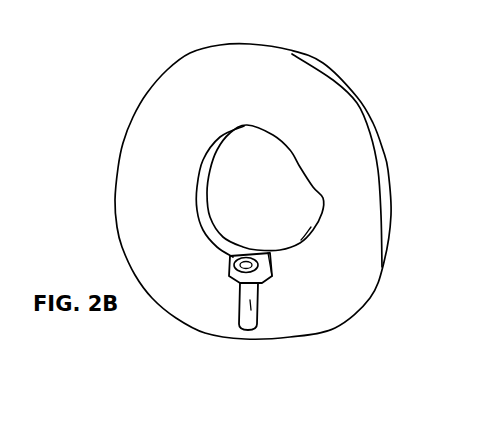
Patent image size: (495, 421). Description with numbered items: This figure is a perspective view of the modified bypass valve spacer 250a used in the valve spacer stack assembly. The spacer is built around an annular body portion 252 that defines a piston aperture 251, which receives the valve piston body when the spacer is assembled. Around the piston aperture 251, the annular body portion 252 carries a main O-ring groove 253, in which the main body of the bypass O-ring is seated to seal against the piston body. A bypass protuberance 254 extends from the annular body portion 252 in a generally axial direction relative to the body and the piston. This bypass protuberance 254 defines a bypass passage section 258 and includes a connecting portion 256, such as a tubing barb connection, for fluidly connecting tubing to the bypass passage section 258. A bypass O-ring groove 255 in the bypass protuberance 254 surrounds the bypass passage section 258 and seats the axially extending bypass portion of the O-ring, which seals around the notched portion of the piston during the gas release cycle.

The modified bypass valve spacer 250a is at (384, 105).
The piston aperture 251 is at (262, 162).
The annular body portion 252 is at (382, 267).
The main O-ring groove 253 is at (207, 218).
The bypass protuberance 254 is at (267, 282).
The bypass O-ring groove 255 is at (228, 257).
The connecting portion 256 is at (258, 317).
The bypass passage section 258 is at (243, 260).